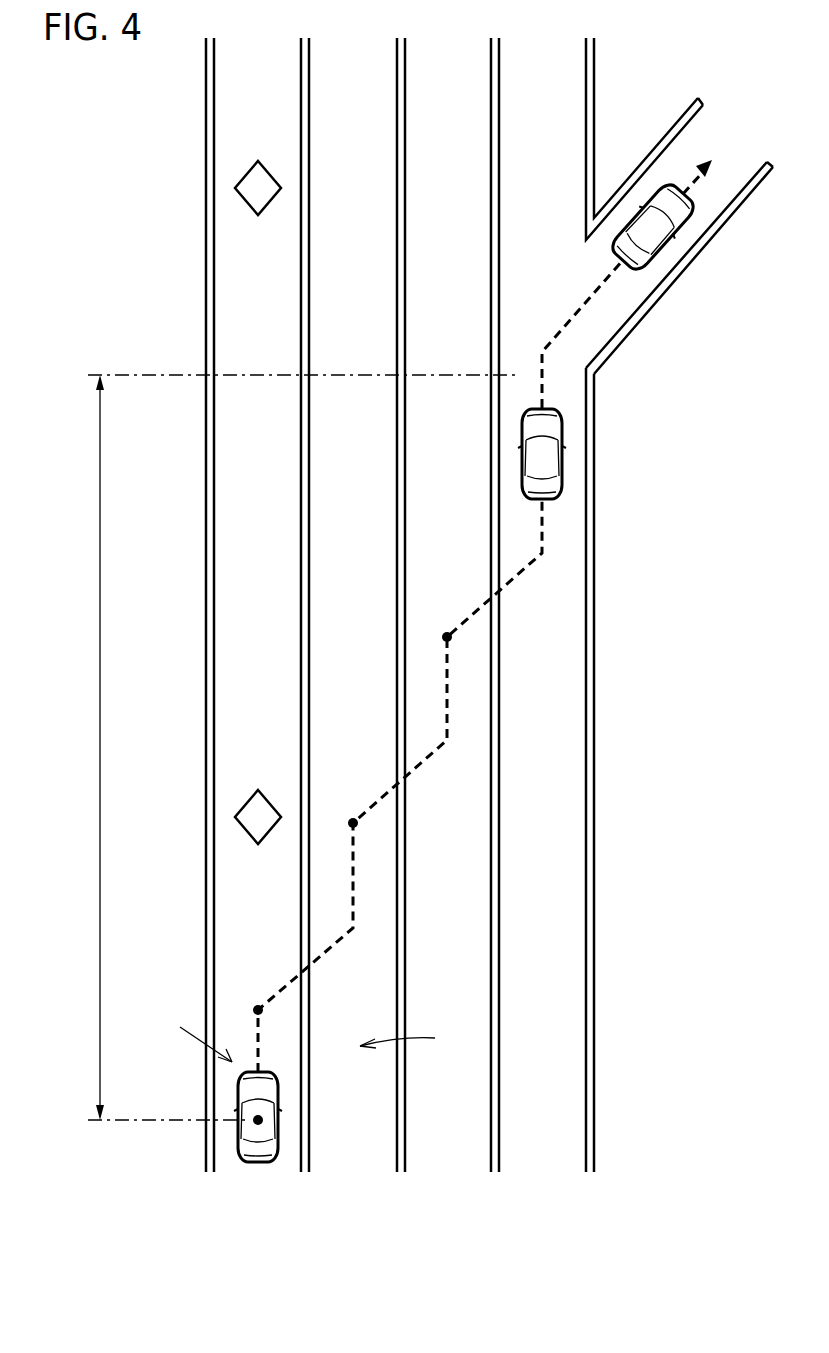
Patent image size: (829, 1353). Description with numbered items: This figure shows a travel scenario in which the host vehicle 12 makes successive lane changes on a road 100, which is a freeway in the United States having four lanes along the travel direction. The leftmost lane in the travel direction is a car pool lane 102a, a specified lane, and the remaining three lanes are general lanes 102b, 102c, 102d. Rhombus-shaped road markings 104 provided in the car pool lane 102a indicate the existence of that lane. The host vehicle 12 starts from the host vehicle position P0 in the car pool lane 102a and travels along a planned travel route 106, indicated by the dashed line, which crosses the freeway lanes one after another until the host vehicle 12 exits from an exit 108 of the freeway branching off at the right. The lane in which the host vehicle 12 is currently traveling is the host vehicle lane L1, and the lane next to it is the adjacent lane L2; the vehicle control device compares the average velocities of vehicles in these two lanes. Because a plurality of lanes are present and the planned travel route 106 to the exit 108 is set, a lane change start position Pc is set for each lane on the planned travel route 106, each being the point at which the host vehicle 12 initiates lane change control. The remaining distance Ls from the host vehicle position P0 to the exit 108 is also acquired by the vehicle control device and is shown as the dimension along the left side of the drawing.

The host vehicle 12 is at (278, 1085).
The road 100 is at (400, 660).
The car pool lane 102a is at (300, 1182).
The general lane 102b is at (395, 1182).
The general lane 102c is at (490, 1182).
The general lane 102d is at (542, 635).
The road markings 104 is at (246, 176).
The planned travel route 106 is at (337, 945).
The exit 108 is at (608, 315).
The lane change start position Pc is at (257, 1008).
The host vehicle position P0 is at (257, 1122).
The remaining distance Ls is at (296, 747).
The host vehicle lane L1 is at (193, 1038).
The adjacent lane L2 is at (411, 1037).